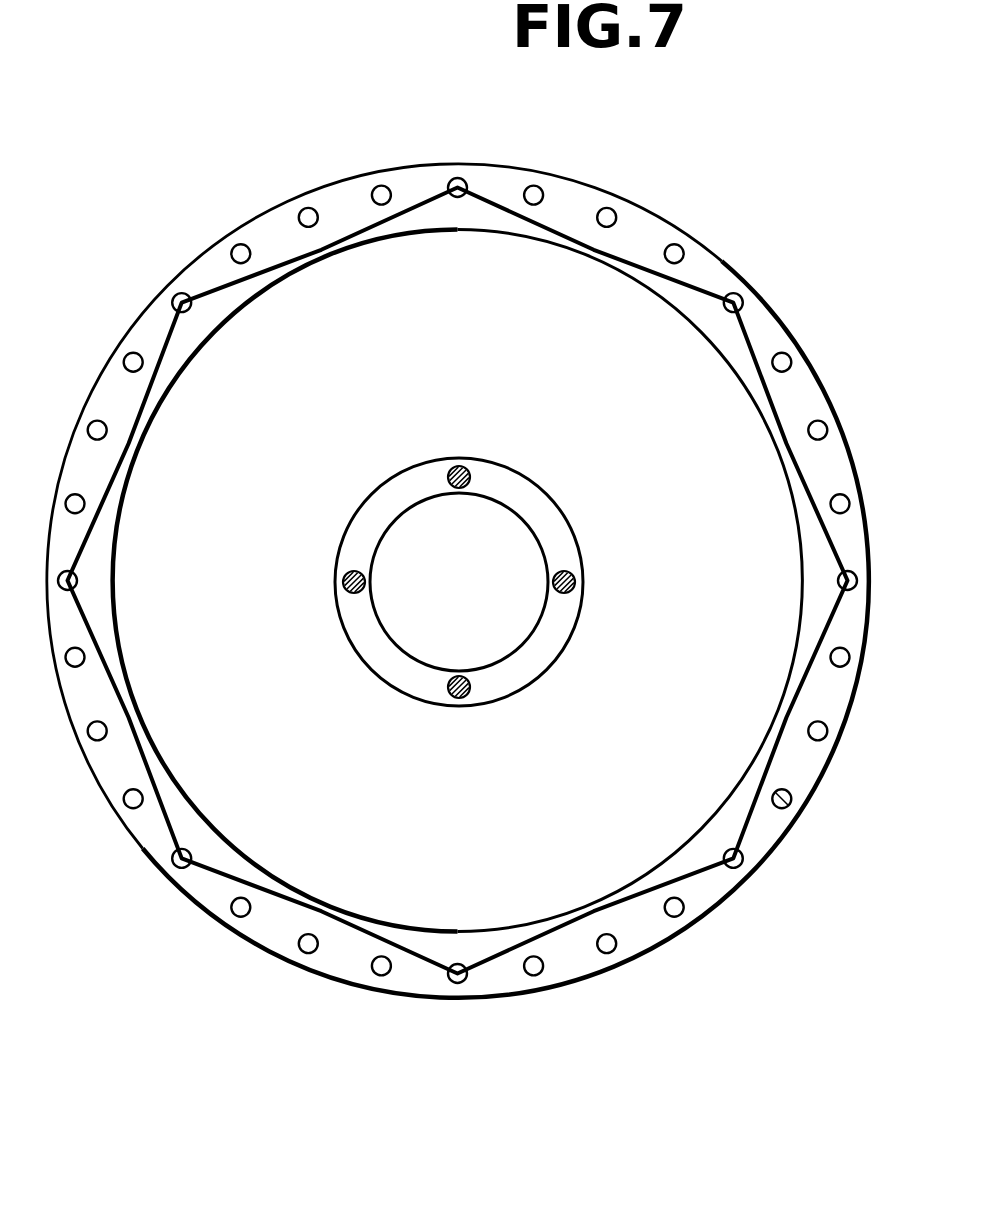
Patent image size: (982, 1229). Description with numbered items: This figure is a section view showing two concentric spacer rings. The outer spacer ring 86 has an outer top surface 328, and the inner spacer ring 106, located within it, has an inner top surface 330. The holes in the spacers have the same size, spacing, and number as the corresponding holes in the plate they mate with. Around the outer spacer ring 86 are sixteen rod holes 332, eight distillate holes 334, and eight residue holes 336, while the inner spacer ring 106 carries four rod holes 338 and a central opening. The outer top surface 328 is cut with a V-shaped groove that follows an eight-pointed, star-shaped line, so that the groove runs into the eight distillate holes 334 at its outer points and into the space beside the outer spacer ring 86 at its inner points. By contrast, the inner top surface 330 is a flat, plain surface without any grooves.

The outer spacer ring 86 is at (198, 903).
The outer top surface 328 is at (158, 834).
The inner top surface 330 is at (376, 636).
The inner spacer ring 106 is at (409, 693).
The rod holes 338 is at (470, 701).
The residue holes 336 is at (300, 966).
The rod holes 332 is at (373, 985).
The distillate holes 334 is at (458, 990).